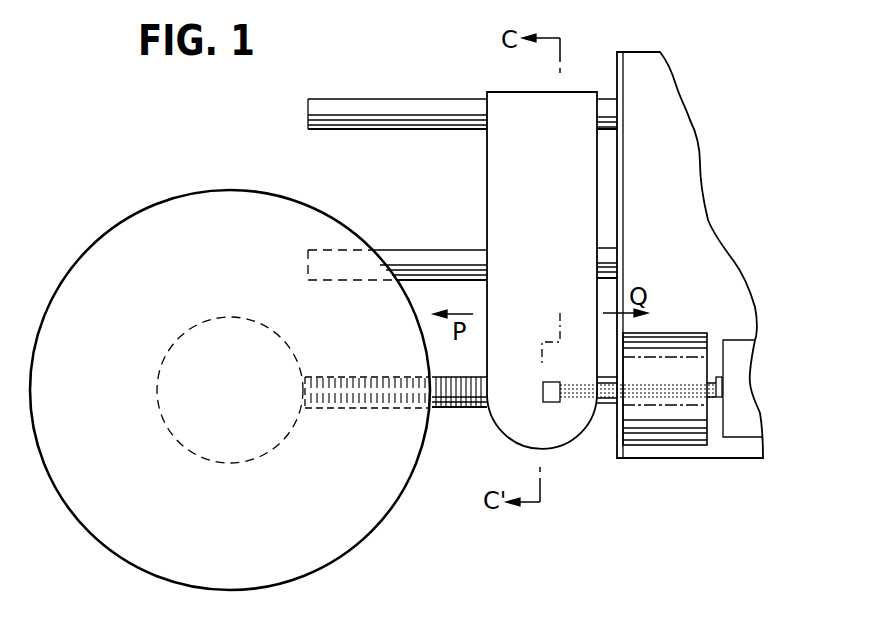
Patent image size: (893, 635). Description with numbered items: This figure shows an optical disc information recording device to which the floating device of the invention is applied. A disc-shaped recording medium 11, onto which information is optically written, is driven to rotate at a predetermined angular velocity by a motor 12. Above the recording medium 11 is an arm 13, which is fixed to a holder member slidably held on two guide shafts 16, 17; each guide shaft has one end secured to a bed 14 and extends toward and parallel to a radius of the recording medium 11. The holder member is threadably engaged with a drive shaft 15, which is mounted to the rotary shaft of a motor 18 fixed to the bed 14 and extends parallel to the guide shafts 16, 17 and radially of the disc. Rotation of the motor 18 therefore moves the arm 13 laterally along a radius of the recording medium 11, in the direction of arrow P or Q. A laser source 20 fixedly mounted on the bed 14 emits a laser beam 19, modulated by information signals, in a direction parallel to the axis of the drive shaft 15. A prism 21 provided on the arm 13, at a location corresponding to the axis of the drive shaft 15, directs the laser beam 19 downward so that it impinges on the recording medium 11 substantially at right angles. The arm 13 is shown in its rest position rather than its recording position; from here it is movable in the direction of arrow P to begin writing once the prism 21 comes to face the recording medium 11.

The disc-shaped recording medium 11 is at (388, 485).
The motor 12 is at (182, 428).
The arm 13 is at (505, 439).
The bed 14 is at (700, 235).
The drive shaft 15 is at (452, 405).
The guide shaft 16 is at (453, 260).
The guide shaft 17 is at (420, 118).
The motor 18 is at (657, 432).
The laser beam 19 is at (713, 376).
The laser source 20 is at (735, 370).
The prism 21 is at (545, 391).